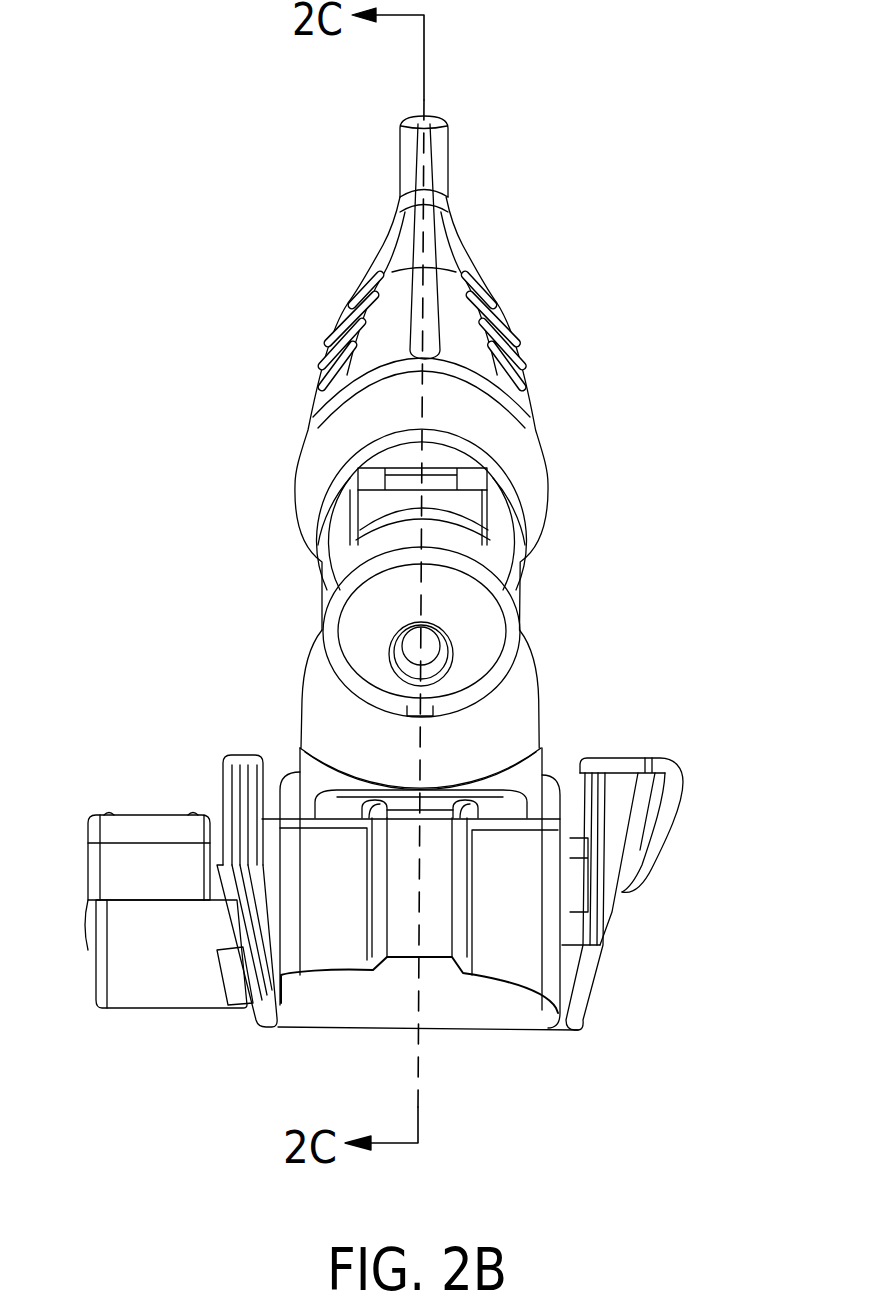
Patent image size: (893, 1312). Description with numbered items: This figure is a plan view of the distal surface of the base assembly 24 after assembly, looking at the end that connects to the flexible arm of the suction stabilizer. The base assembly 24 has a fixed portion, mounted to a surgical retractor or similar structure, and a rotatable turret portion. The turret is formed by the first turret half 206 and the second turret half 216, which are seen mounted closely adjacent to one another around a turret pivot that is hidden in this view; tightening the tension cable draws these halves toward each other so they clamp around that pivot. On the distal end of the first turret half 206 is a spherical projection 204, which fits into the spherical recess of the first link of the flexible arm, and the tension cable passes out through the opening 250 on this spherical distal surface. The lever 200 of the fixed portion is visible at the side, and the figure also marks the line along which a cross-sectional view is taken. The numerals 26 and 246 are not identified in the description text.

The base assembly 24 is at (169, 411).
The second turret half 216 is at (533, 460).
The first turret half 206 is at (337, 580).
The spherical projection 204 is at (458, 613).
The opening 250 is at (433, 667).
The base 26 is at (506, 1022).
The latch frame 246 is at (683, 800).
The lever 200 is at (150, 977).